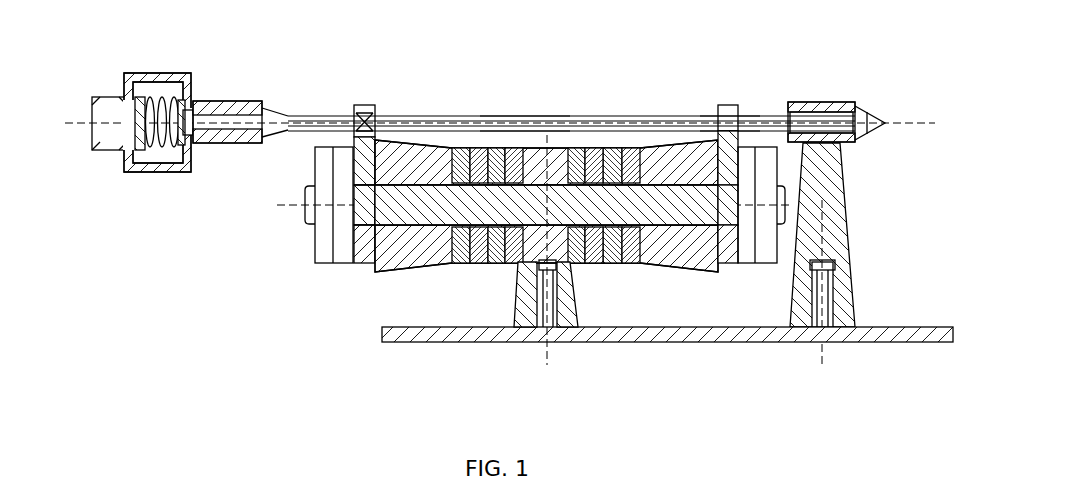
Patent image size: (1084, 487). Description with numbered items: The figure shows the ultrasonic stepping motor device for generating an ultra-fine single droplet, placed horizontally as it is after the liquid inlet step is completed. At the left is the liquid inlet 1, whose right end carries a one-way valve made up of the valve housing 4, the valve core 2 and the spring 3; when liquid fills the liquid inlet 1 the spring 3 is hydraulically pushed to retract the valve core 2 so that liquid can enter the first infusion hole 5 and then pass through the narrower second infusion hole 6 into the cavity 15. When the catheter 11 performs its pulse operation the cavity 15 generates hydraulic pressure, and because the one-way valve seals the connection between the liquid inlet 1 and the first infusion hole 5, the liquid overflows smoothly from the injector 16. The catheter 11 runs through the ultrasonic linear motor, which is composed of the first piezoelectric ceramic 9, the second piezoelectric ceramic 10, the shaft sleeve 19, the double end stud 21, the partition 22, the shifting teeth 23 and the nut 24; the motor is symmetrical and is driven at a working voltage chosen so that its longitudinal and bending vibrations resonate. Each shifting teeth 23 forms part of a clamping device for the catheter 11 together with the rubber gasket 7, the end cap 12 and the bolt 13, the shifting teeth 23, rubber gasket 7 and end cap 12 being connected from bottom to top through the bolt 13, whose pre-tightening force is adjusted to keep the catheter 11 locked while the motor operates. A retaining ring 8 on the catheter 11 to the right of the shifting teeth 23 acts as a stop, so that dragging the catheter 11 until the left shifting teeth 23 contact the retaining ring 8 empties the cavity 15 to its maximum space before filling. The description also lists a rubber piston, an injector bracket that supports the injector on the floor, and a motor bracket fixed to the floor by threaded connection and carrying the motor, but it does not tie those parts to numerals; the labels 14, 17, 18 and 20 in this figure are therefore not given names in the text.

The liquid inlet 1 is at (112, 115).
The valve core 2 is at (130, 110).
The spring 3 is at (165, 113).
The valve housing 4 is at (170, 72).
The first infusion hole 5 is at (243, 117).
The second infusion hole 6 is at (327, 118).
The rubber gasket 7 is at (353, 110).
The retaining ring 8 is at (375, 105).
The first piezoelectric ceramic 9 is at (477, 157).
The second piezoelectric ceramic 10 is at (512, 155).
The catheter 11 is at (525, 112).
The end cap 12 is at (718, 107).
The bolt 13 is at (724, 100).
The bearing seat 14 is at (782, 105).
The cavity 15 is at (813, 110).
The injector 16 is at (867, 113).
The support column 17 is at (833, 237).
The base plate 18 is at (790, 330).
The shaft sleeve 19 is at (677, 247).
The support seat 20 is at (563, 300).
The double end stud 21 is at (543, 210).
The partition 22 is at (452, 258).
The shifting teeth 23 is at (365, 257).
The nut 24 is at (323, 220).